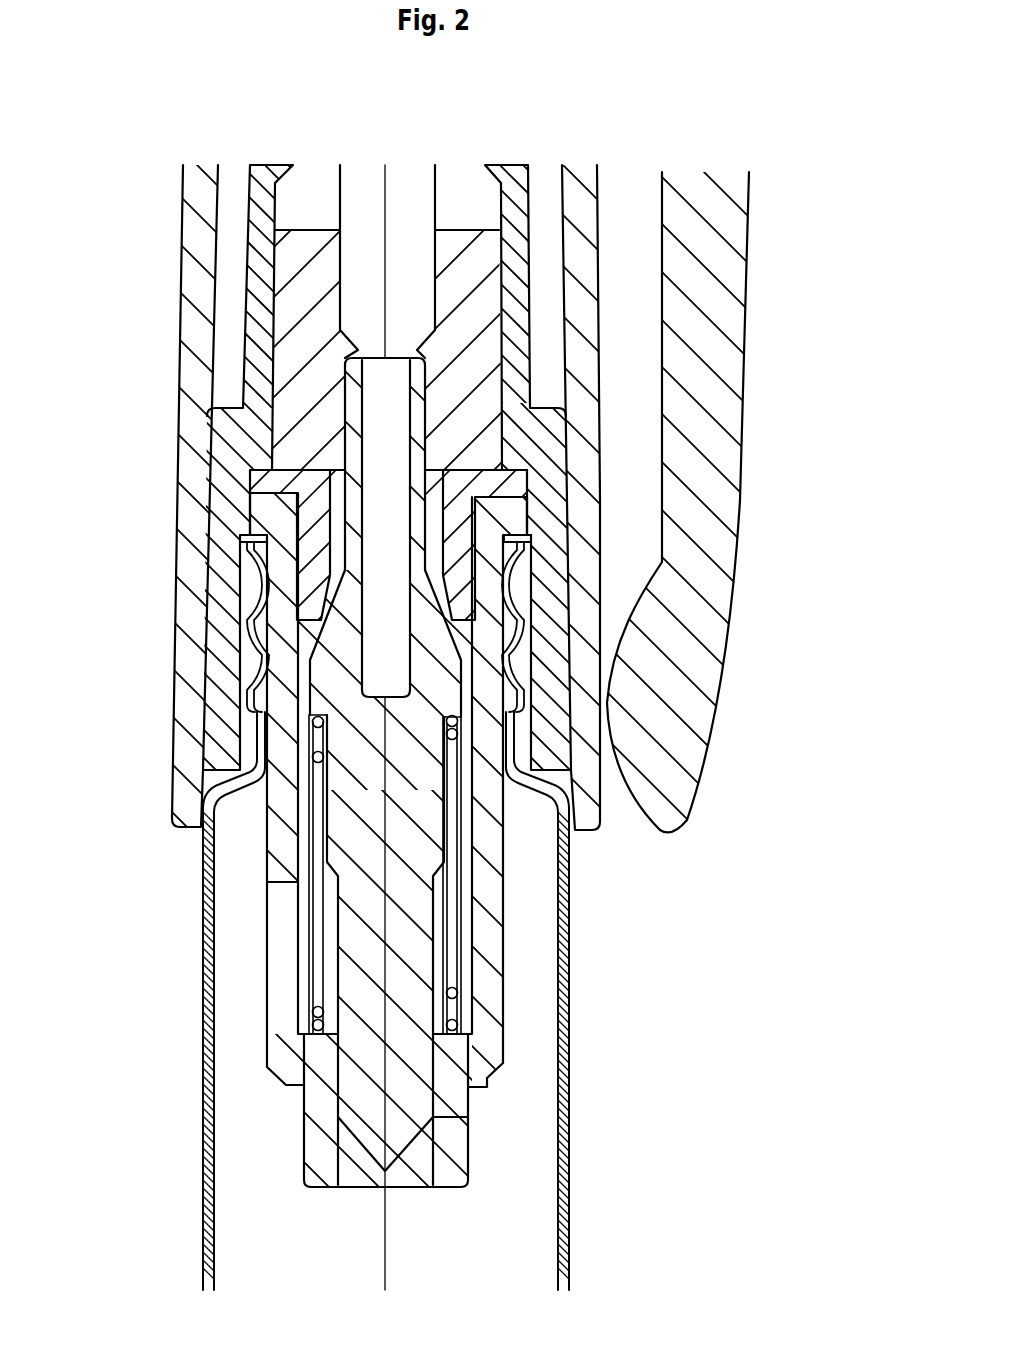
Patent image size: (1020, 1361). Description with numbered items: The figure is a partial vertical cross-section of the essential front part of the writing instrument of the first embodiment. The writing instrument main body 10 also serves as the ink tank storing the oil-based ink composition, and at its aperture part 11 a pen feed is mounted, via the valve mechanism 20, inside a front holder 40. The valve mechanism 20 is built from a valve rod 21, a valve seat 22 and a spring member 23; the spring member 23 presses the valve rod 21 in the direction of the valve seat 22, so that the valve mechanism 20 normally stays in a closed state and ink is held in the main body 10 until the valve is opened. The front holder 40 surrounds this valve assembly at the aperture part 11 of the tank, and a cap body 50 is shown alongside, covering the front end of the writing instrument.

The writing instrument main body 10 is at (573, 1068).
The aperture part 11 is at (247, 542).
The valve mechanism 20 is at (493, 940).
The valve rod 21 is at (468, 1116).
The valve seat 22 is at (260, 482).
The spring member 23 is at (455, 990).
The front holder 40 is at (208, 418).
The cap body 50 is at (737, 280).